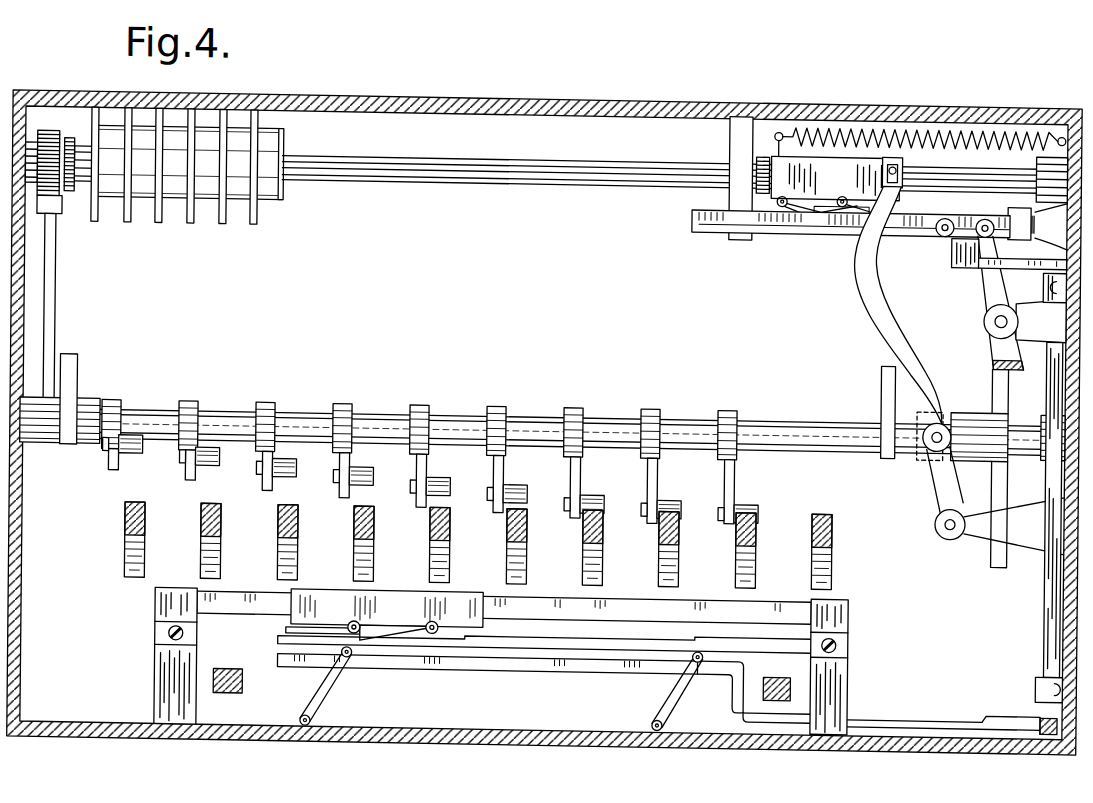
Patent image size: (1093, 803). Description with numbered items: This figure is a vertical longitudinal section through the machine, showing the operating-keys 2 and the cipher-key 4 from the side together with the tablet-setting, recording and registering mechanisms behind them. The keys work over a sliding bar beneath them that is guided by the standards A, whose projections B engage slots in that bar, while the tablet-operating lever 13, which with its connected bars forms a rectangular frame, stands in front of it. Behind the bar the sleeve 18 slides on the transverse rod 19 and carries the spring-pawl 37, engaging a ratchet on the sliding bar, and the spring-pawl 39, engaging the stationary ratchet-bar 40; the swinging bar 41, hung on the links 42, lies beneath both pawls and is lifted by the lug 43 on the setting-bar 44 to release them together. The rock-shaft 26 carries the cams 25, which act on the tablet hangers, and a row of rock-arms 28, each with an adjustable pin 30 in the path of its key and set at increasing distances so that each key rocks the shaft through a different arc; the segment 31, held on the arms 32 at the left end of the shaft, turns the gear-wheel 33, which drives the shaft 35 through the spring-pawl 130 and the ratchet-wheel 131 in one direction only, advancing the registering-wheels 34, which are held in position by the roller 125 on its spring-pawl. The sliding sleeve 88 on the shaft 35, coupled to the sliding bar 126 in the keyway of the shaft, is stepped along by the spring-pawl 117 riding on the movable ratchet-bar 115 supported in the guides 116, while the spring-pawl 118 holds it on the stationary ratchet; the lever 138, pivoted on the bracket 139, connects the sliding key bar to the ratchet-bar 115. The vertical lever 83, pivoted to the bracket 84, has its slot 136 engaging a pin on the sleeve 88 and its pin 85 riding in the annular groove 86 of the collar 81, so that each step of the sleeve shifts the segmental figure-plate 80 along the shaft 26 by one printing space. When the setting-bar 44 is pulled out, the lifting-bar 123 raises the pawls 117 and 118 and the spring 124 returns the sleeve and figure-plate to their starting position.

The gear-wheel 33 is at (47, 129).
The spring-pawl 130 is at (73, 143).
The ratchet-wheel 131 is at (69, 192).
The segment 31 is at (56, 210).
The arms 32 is at (58, 306).
The registering-wheels 34 is at (166, 206).
The shaft 35 is at (492, 152).
The sliding bar 126 is at (356, 162).
The spring 124 is at (834, 118).
The guides 116 is at (742, 218).
The roller 125 is at (757, 148).
The sliding sleeve 88 is at (835, 178).
The spring-pawl 117 is at (800, 201).
The spring-pawl 118 is at (856, 205).
The sliding ratchet-bar 115 is at (928, 214).
The slot 136 is at (901, 166).
The lever 138 is at (994, 276).
The bracket 139 is at (1009, 291).
The rock-shaft 26 is at (768, 414).
The cams 25 is at (77, 393).
The rock-arms 28 is at (661, 481).
The pin 30 is at (760, 500).
The collar 81 is at (976, 409).
The segmental figure-plate 80 is at (999, 541).
The vertical lever 83 is at (898, 305).
The annular groove 86 is at (946, 401).
The pin 85 is at (933, 443).
The bracket 84 is at (1000, 524).
The lifting-bar 123 is at (1049, 597).
The setting-bar 44 is at (1043, 672).
The cam or lug 43 is at (1046, 705).
The operating-keys 2 is at (147, 524).
The cipher-key 4 is at (833, 551).
The rod 19 is at (541, 596).
The sleeve 18 is at (458, 592).
The spring-pawl 37 is at (307, 624).
The spring-pawl 39 is at (402, 627).
The stationary ratchet-bar 40 is at (620, 658).
The swinging bar 41 is at (500, 645).
The links 42 is at (334, 682).
The tablet-operating lever 13 is at (248, 678).
The standards A is at (166, 688).
The projections B is at (166, 632).